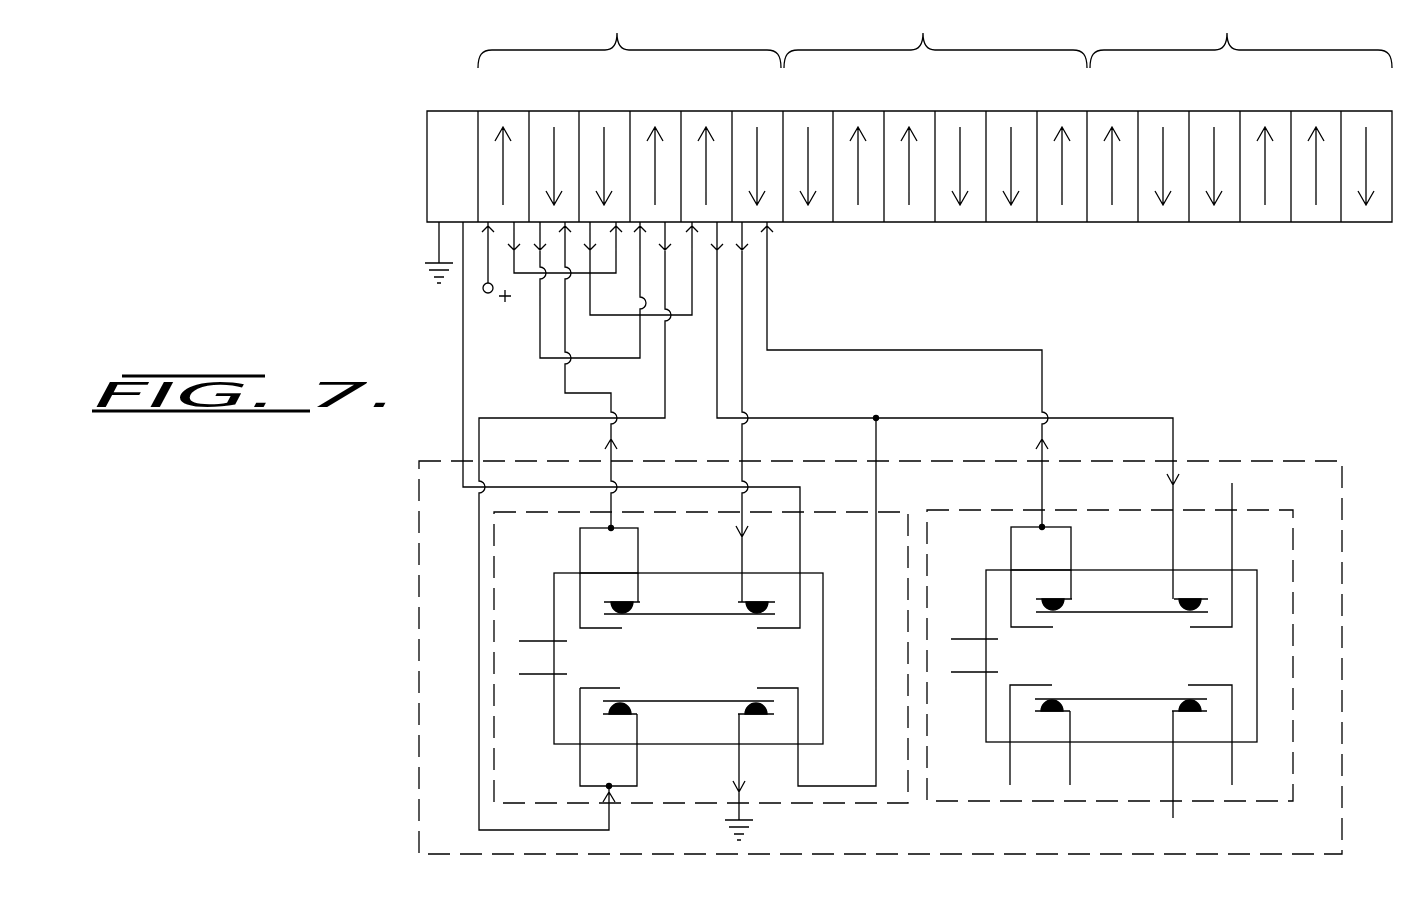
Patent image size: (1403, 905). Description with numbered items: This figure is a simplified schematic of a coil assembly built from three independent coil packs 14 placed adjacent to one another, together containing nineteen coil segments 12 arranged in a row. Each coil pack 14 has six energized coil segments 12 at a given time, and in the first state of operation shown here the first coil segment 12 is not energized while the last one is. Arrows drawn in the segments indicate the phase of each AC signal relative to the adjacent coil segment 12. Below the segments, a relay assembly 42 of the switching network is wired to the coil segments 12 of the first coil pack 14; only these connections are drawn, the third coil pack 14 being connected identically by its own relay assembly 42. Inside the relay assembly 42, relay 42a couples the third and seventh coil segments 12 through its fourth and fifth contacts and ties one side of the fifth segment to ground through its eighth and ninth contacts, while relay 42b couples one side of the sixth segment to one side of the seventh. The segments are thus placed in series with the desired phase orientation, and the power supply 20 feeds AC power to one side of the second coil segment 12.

The coil segment 12 is at (1357, 118).
The coil pack 14 is at (935, 35).
The power supply 20 is at (481, 292).
The relay assembly 42 is at (418, 588).
The relay 42a is at (801, 806).
The relay 42b is at (1185, 804).